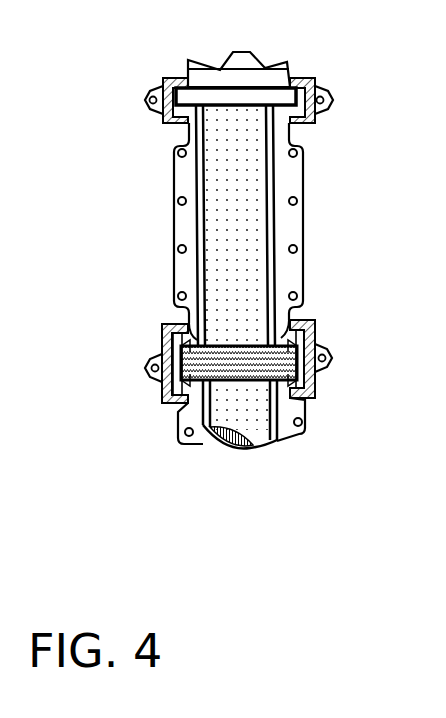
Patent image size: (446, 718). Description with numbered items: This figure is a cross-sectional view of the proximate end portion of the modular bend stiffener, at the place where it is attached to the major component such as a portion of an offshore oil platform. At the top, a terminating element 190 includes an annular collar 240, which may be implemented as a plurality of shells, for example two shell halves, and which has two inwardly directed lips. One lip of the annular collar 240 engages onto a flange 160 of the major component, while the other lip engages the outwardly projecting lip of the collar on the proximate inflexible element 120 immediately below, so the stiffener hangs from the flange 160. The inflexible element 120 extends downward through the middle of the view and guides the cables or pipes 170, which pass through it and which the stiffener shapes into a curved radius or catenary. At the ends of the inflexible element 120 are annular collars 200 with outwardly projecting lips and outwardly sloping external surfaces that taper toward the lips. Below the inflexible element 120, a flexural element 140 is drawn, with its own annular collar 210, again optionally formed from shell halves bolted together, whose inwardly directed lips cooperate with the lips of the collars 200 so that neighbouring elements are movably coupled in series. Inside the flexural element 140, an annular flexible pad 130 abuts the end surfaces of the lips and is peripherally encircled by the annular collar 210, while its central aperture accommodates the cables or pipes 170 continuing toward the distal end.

The inflexible element 120 is at (143, 145).
The flexible pad 130 is at (182, 405).
The flexural element 140 is at (138, 325).
The flange 160 is at (250, 93).
The cables or pipes 170 is at (253, 423).
The terminating element 190 is at (140, 60).
The annular collar 200 is at (285, 108).
The annular collar 210 is at (315, 386).
The annular collar 240 is at (313, 121).